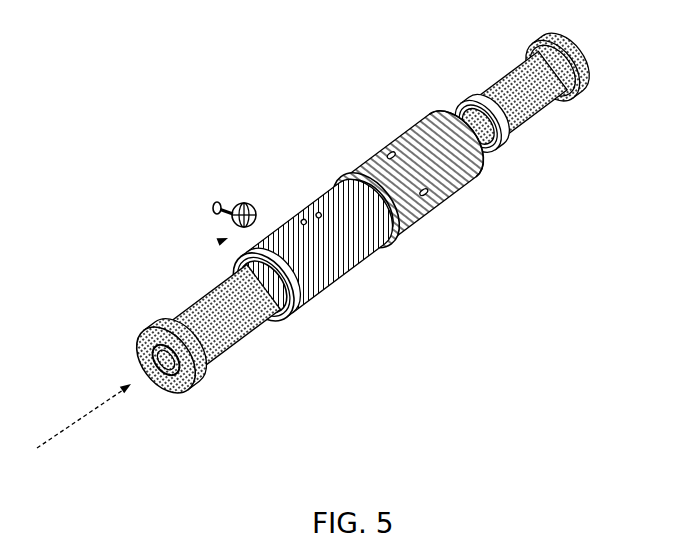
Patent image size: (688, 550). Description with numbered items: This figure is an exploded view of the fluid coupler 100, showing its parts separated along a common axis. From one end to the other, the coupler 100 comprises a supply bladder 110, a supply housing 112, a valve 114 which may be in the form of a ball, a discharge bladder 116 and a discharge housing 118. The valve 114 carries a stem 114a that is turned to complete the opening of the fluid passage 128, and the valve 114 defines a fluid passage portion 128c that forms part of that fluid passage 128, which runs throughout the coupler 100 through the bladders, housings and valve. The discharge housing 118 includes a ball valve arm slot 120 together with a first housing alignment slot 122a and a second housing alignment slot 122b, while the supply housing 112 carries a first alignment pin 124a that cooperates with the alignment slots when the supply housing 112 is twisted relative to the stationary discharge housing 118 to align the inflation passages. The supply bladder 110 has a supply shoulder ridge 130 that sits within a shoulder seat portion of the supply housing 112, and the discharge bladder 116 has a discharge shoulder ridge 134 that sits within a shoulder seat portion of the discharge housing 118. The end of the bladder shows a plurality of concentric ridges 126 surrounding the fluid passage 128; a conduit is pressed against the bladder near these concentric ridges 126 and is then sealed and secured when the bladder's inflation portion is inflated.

The coupler 100 is at (224, 92).
The supply bladder 110 is at (243, 338).
The supply housing 112 is at (340, 295).
The valve 114 is at (252, 208).
The stem 114a is at (224, 206).
The discharge bladder 116 is at (538, 118).
The discharge housing 118 is at (476, 180).
The ball valve arm slot 120 is at (368, 172).
The first housing alignment slot 122a is at (407, 214).
The second housing alignment slot 122b is at (370, 240).
The first alignment pin 124a is at (319, 212).
The concentric ridges 126 is at (153, 387).
The fluid passage 128 is at (78, 422).
The fluid passage portion 128c is at (222, 241).
The supply shoulder ridge 130 is at (200, 370).
The discharge shoulder ridge 134 is at (578, 88).